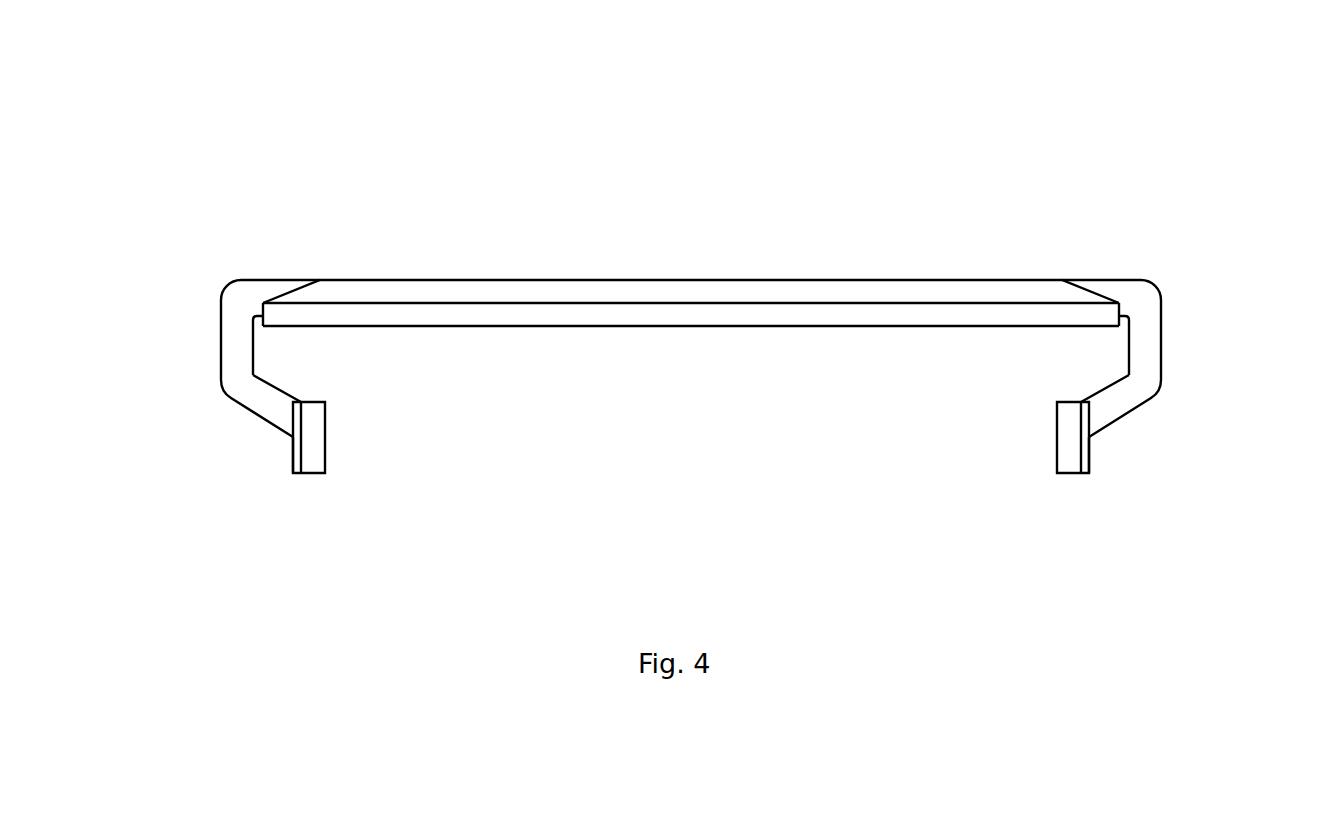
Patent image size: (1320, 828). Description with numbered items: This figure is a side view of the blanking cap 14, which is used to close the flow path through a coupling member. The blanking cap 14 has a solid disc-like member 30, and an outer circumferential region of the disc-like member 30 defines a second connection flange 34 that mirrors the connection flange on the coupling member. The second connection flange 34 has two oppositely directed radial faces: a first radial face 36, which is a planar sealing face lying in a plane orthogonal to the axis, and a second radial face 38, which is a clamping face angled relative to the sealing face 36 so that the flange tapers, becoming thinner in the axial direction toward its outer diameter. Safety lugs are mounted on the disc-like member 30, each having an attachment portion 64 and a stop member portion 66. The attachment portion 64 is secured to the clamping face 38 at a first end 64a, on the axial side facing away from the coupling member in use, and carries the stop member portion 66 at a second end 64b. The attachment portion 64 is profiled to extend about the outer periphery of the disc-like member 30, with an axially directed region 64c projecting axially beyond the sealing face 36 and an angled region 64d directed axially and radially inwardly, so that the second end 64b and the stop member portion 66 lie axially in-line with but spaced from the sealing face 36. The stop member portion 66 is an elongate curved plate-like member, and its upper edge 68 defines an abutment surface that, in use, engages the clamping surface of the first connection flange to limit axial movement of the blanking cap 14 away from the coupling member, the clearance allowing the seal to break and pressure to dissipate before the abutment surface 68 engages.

The blanking cap 14 is at (1018, 152).
The disc-like member 30 is at (747, 279).
The second connection flange 34 is at (1022, 290).
The first radial face (sealing face) 36 is at (480, 327).
The second radial face (clamping face) 38 is at (562, 288).
The attachment portion 64 is at (217, 370).
The first end of attachment portion 64a is at (277, 288).
The second end of attachment portion 64b is at (288, 418).
The axially directed region 64c is at (233, 313).
The angled region 64d is at (250, 393).
The stop member portion 66 is at (317, 462).
The upper edge (abutment surface) 68 is at (317, 398).